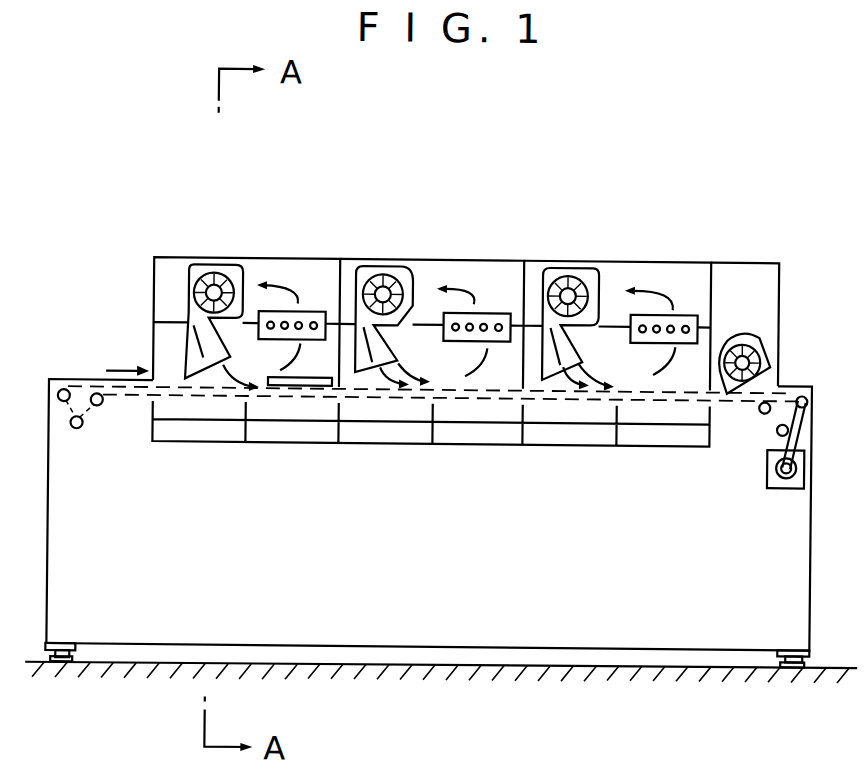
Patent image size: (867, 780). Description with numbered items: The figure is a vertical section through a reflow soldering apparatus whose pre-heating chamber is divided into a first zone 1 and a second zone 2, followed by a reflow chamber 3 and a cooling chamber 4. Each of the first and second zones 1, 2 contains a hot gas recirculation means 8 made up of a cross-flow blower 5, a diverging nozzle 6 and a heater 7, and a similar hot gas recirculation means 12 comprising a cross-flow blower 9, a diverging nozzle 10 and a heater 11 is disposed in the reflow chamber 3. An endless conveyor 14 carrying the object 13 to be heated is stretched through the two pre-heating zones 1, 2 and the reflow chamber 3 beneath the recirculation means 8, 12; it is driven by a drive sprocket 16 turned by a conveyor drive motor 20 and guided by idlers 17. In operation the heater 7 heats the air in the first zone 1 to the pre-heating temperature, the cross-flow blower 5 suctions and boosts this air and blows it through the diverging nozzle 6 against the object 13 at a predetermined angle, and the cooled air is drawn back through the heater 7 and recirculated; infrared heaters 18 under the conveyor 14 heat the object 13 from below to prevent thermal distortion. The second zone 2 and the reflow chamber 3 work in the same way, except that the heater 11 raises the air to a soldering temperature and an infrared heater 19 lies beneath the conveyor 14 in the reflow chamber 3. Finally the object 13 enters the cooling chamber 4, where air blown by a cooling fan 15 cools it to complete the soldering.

The first zone 1 is at (287, 256).
The second zone 2 is at (353, 256).
The reflow chamber 3 is at (673, 256).
The cooling chamber 4 is at (742, 256).
The cross-flow blower 5 is at (197, 263).
The diverging nozzle 6 is at (188, 311).
The heater 7 is at (258, 309).
The hot gas recirculation means 8 is at (143, 209).
The cross-flow blower 9 is at (575, 263).
The diverging nozzle 10 is at (542, 300).
The heater 11 is at (672, 309).
The hot gas recirculation means 12 is at (515, 207).
The object to be heated 13 is at (268, 375).
The endless conveyor 14 is at (102, 379).
The cooling fan 15 is at (748, 333).
The drive sprocket 16 is at (803, 389).
The idler 17 is at (63, 389).
The infrared heaters 18 is at (275, 440).
The infrared heater 19 is at (560, 440).
The conveyor drive motor 20 is at (785, 481).